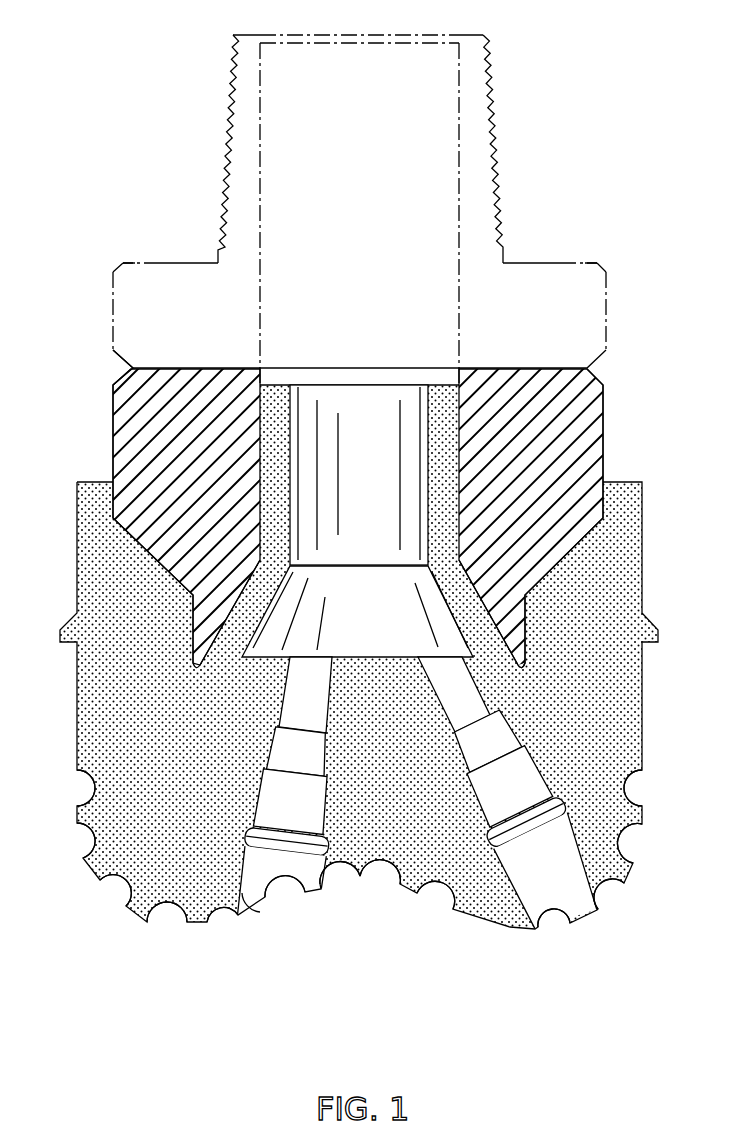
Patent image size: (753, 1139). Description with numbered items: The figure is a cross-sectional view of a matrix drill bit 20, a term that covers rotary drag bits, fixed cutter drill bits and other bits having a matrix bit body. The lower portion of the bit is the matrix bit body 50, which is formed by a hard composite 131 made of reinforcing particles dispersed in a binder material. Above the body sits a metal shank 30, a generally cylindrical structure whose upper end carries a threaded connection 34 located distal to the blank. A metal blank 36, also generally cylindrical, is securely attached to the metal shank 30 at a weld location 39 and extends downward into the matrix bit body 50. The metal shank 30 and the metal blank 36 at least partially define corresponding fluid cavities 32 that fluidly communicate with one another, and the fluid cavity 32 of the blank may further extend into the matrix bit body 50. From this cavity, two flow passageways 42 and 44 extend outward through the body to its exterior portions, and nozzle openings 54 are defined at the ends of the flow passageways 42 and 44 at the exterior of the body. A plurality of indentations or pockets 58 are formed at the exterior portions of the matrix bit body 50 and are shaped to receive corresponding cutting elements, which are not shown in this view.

The matrix drill bit 20 is at (376, 494).
The metal shank 30 is at (354, 210).
The fluid cavity 32 is at (371, 194).
The threaded connection 34 is at (226, 145).
The metal blank 36 is at (547, 475).
The weld location 39 is at (113, 370).
The flow passageway 42 is at (303, 810).
The flow passageway 44 is at (518, 798).
The matrix bit body 50 is at (376, 502).
The nozzle openings 54 is at (258, 912).
The pockets 58 is at (77, 784).
The hard composite 131 is at (191, 789).